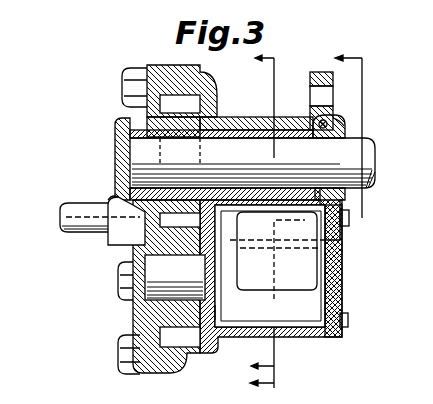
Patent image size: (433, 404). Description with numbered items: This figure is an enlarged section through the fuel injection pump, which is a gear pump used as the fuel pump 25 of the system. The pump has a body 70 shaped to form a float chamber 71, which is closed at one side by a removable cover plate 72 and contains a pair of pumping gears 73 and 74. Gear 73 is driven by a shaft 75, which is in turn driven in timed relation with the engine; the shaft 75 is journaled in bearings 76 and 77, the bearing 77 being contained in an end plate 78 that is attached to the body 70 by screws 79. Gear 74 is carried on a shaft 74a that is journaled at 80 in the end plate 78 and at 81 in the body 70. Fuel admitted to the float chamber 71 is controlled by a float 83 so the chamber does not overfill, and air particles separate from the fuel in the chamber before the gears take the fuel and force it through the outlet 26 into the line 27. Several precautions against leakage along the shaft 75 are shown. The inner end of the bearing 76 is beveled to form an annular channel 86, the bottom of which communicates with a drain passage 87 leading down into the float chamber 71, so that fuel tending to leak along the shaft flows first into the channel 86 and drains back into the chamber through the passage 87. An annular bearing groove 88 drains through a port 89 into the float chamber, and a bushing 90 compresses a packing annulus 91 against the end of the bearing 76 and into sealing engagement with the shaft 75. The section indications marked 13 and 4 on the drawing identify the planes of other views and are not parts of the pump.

The fuel pump 25 is at (167, 78).
The section line 13- 13 is at (253, 220).
The section line 4- 4 is at (316, 223).
The pumping gear 73 is at (176, 128).
The screws 79 is at (135, 76).
The body 70 is at (235, 126).
The annular channel 86 is at (205, 133).
The bearing 77 is at (135, 127).
The bearing 76 is at (284, 130).
The bushing 90 is at (356, 109).
The annular bearing groove 88 is at (323, 119).
The packing annulus 91 is at (336, 121).
The shaft 75 is at (350, 158).
The port 89 is at (341, 199).
The float chamber 71 is at (293, 276).
The cover plate 72 is at (340, 263).
The float 83 is at (316, 240).
The bearing 81 is at (217, 313).
The pumping gear 74 is at (148, 298).
The end plate 78 is at (135, 252).
The shaft 74a is at (160, 287).
The bearing 80 is at (145, 312).
The outlet 26 is at (106, 216).
The drain passage 87 is at (112, 196).
The line 27 is at (73, 208).